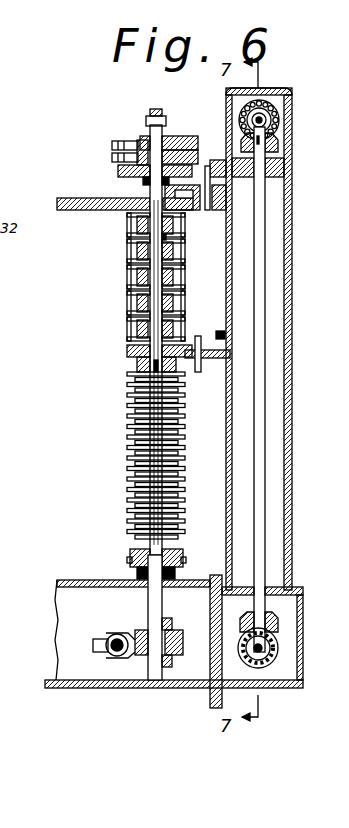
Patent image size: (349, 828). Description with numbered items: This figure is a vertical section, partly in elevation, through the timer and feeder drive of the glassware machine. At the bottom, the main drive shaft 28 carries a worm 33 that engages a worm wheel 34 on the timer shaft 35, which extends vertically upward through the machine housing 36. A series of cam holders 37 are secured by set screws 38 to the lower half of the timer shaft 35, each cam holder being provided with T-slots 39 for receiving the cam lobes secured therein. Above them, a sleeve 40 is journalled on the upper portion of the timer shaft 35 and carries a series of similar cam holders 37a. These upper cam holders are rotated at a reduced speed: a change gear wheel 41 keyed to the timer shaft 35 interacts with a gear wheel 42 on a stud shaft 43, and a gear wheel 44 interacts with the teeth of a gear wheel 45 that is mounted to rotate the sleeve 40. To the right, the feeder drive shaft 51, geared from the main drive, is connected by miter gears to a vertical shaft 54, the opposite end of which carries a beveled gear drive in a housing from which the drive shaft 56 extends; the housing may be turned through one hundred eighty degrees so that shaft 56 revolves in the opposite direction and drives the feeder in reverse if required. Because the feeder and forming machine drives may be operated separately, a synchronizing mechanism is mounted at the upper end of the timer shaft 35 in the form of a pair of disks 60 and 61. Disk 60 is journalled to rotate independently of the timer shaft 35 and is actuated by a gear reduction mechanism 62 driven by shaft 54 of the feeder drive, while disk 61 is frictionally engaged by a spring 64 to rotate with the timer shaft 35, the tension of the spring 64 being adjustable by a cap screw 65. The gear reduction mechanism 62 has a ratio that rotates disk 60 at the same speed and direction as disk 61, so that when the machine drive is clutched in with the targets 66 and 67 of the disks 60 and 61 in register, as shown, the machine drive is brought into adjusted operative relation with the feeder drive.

The main drive shaft 28 is at (113, 635).
The worm 33 is at (110, 650).
The worm wheel 34 is at (172, 640).
The timer shaft 35 is at (154, 682).
The machine housing 36 is at (110, 203).
The cam holders 37 is at (182, 463).
The cam holders 37a is at (180, 237).
The set screws 38 is at (184, 558).
The T-slots 39 is at (130, 556).
The sleeve 40 is at (140, 240).
The change gear wheel 41 is at (137, 360).
The gear wheel 42 is at (214, 345).
The stud shaft 43 is at (190, 365).
The gear wheel 44 is at (198, 340).
The gear wheel 45 is at (130, 346).
The feeder drive shaft 51 is at (268, 648).
The shaft 54 is at (264, 402).
The drive shaft 56 is at (280, 118).
The disk 60 is at (112, 157).
The disk 61 is at (113, 143).
The gear reduction mechanism 62 is at (207, 170).
The spring 64 is at (165, 132).
The cap screw 65 is at (153, 117).
The target 66 is at (133, 178).
The target 67 is at (139, 142).